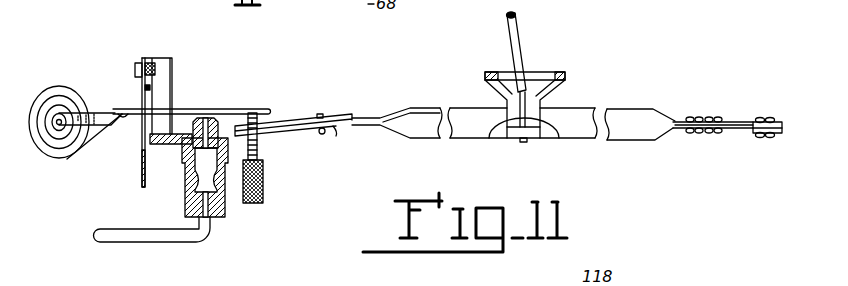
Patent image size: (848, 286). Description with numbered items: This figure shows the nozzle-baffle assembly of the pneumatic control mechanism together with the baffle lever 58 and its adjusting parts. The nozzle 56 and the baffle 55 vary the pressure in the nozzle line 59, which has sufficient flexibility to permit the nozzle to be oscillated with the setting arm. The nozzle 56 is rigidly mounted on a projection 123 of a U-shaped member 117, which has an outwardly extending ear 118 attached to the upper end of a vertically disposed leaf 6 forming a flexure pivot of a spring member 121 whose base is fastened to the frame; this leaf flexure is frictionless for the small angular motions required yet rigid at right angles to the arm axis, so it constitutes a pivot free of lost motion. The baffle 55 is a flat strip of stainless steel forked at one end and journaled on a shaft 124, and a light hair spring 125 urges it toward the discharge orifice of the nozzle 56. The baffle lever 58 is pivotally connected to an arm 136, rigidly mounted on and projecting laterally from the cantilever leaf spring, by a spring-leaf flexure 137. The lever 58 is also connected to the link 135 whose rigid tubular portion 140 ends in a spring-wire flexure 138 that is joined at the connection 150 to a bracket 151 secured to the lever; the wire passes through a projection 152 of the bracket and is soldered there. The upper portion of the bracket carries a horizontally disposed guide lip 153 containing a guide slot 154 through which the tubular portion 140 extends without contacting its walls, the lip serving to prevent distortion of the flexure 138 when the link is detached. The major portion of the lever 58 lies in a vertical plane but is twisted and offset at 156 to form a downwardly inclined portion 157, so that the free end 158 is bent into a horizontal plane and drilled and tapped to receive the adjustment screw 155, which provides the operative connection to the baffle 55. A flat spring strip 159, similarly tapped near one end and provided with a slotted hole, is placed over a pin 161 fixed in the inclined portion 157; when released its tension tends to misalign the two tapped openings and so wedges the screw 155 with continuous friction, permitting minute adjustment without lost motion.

The leafs 6 is at (138, 105).
The baffle 55 is at (184, 110).
The nozzle 56 is at (213, 118).
The baffle lever 58 is at (628, 118).
The nozzle line 59 is at (152, 243).
The U-shaped member 117 is at (172, 56).
The ear 118 is at (143, 86).
The spring member 121 is at (138, 163).
The projection 123 is at (173, 146).
The shaft 124 is at (60, 125).
The hair spring 125 is at (50, 86).
The link 135 is at (521, 24).
The arm 136 is at (768, 120).
The spring-leaf flexure 137 is at (738, 134).
The spring-wire flexure 138 is at (528, 107).
The rigid tubular portion 140 is at (525, 57).
The connection 150 is at (498, 127).
The bracket 151 is at (560, 76).
The projection 152 is at (547, 131).
The guide lip 153 is at (490, 80).
The guide slot 154 is at (512, 77).
The adjustment screw 155 is at (264, 188).
The twisted and offset portion 156 is at (388, 117).
The downwardly inclined portion 157 is at (334, 130).
The free end 158 is at (272, 140).
The flat spring strip 159 is at (339, 112).
The pin 161 is at (319, 113).